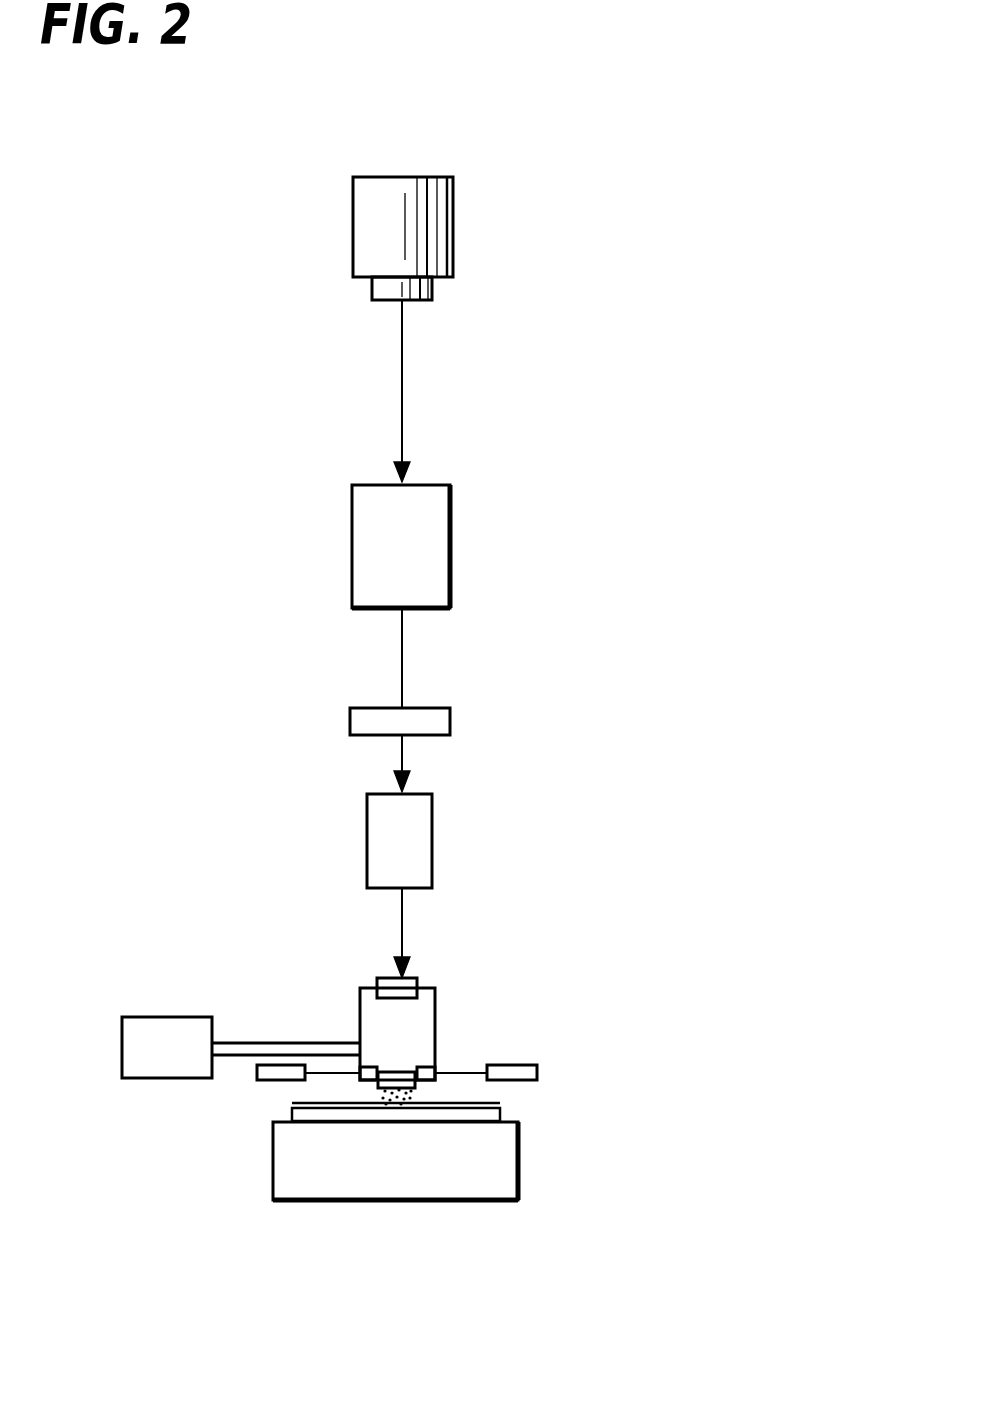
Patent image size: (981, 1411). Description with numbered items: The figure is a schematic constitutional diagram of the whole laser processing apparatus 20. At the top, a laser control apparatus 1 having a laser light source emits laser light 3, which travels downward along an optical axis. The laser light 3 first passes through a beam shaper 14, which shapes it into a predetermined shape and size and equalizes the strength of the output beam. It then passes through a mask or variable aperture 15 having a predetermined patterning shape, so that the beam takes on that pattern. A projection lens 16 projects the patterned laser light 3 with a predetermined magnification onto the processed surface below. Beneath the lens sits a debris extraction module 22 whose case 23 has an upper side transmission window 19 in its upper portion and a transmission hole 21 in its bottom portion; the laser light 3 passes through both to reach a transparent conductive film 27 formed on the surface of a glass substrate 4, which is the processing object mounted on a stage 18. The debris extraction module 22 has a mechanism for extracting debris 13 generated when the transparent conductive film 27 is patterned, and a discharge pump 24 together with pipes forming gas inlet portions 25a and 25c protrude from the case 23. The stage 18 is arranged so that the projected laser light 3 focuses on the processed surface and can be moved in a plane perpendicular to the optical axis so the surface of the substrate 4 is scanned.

The laser control apparatus 1 is at (453, 217).
The laser light 3 is at (402, 355).
The glass substrate 4 is at (492, 1117).
The debris 13 is at (398, 1095).
The beam shaper 14 is at (450, 545).
The mask or variable aperture 15 is at (450, 725).
The projection lens 16 is at (432, 820).
The stage 18 is at (502, 1160).
The upper side transmission window 19 is at (387, 980).
The laser processing apparatus 20 is at (670, 622).
The transmission hole 21 is at (383, 1095).
The debris extraction module 22 is at (272, 1236).
The case 23 is at (437, 998).
The discharge pump 24 is at (163, 1017).
The gas inlet portion 25a is at (253, 1072).
The gas inlet portion 25c is at (540, 1070).
The transparent conductive film 27 is at (503, 1107).